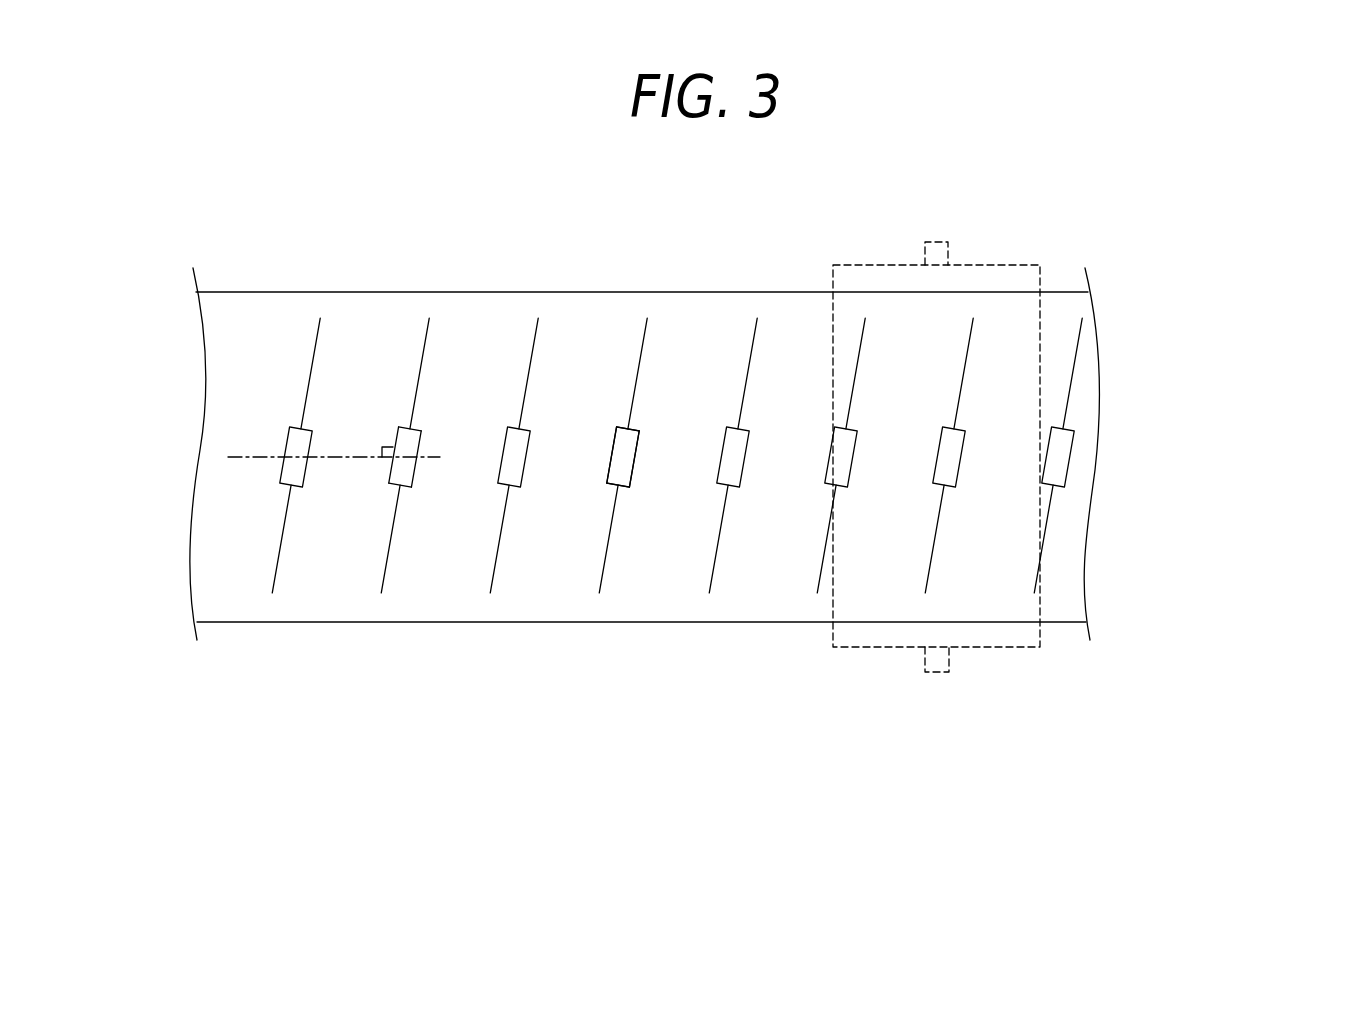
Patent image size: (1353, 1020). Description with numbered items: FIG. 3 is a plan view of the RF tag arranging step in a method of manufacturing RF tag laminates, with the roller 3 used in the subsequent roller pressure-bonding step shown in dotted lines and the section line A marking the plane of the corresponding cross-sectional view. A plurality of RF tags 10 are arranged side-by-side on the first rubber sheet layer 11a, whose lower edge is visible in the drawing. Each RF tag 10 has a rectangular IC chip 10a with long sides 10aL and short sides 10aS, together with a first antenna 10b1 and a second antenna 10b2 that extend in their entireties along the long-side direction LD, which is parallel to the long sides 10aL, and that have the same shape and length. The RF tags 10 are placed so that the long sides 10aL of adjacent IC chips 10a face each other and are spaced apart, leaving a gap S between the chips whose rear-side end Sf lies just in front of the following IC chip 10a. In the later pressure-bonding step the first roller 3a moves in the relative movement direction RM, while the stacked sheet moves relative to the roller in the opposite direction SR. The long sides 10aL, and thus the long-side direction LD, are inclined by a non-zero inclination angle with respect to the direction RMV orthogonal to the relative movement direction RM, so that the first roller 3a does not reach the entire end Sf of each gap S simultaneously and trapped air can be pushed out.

The roller 3 is at (992, 265).
The first roller 3a is at (958, 430).
The RF tag 10 is at (535, 455).
The IC chip 10a is at (633, 438).
The long side 10aL is at (390, 467).
The short side 10aS is at (405, 487).
The first antenna 10b1 is at (499, 539).
The second antenna 10b2 is at (528, 373).
The first rubber sheet layer 11a is at (431, 605).
The gap S is at (644, 477).
The rear-side end of gap Sf is at (813, 445).
The relative movement direction RM is at (640, 796).
The direction orthogonal to relative movement direction RMV is at (393, 457).
The long-side direction LD is at (393, 457).
The relative movement direction of stacked sheet SR is at (1173, 445).
The A-A section A is at (145, 457).